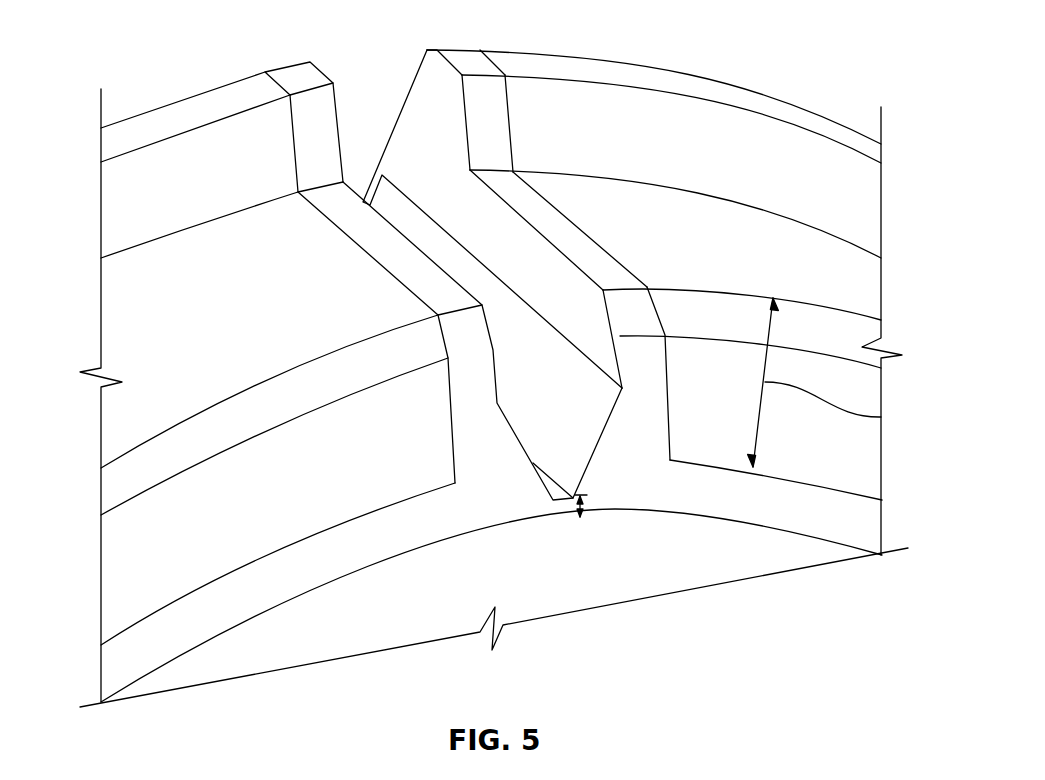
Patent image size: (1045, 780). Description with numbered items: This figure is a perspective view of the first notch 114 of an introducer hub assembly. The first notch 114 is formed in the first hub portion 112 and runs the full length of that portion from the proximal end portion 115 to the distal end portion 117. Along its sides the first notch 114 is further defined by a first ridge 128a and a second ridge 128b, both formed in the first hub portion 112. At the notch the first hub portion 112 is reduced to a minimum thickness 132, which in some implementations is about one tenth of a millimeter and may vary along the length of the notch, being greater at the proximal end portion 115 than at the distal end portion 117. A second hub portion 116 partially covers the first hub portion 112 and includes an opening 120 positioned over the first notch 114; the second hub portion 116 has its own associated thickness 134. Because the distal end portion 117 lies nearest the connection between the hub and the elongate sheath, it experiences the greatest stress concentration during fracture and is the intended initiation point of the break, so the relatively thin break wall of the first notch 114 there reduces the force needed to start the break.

The first hub portion 112 is at (485, 102).
The first notch 114 is at (530, 210).
The proximal end portion 115 is at (758, 93).
The second hub portion 116 is at (143, 467).
The distal end portion 117 is at (822, 313).
The opening 120 is at (363, 130).
The first ridge 128a is at (480, 437).
The second ridge 128b is at (653, 415).
The minimum thickness 132 is at (585, 512).
The thickness 134 is at (881, 417).